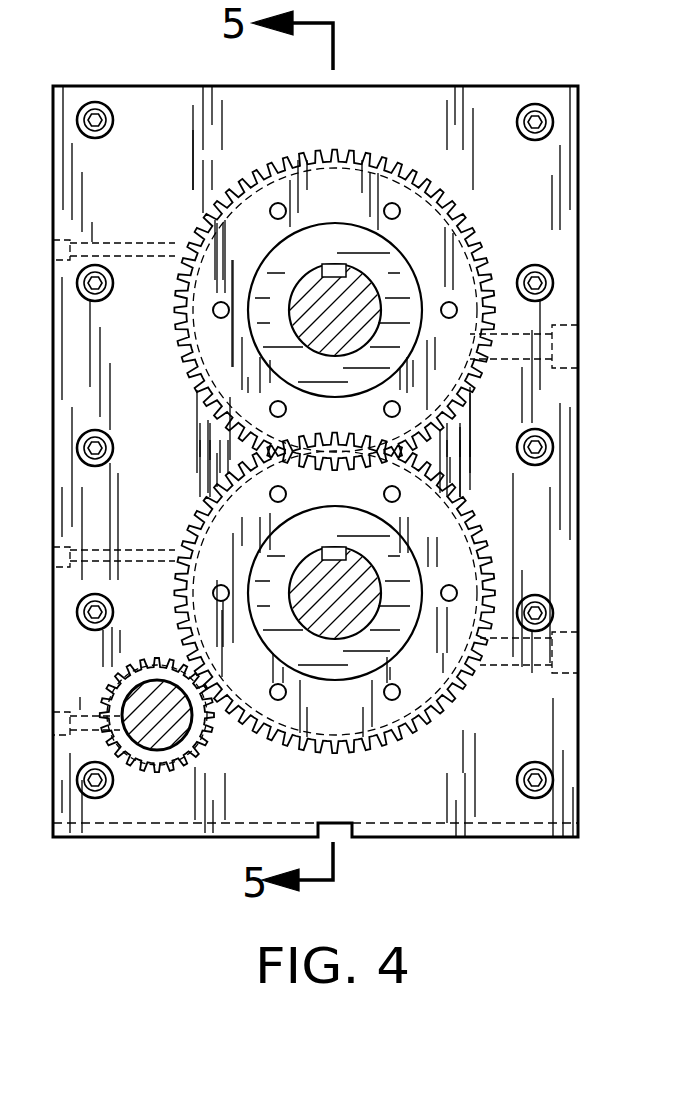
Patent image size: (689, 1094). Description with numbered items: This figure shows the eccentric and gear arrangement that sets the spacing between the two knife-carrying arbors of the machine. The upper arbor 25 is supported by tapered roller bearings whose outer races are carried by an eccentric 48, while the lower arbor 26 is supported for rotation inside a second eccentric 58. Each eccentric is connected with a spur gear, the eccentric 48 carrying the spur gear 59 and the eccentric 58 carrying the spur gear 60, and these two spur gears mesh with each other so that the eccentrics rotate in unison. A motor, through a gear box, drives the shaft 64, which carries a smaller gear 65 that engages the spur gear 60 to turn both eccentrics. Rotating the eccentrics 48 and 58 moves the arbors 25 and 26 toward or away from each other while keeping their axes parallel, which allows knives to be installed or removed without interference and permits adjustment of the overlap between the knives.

The upper arbor 25 is at (314, 296).
The lower arbor 26 is at (320, 578).
The eccentric 48 is at (470, 219).
The eccentric 58 is at (393, 603).
The spur gear 59 is at (334, 259).
The spur gear 60 is at (490, 580).
The shaft 64 is at (155, 700).
The gear 65 is at (157, 714).